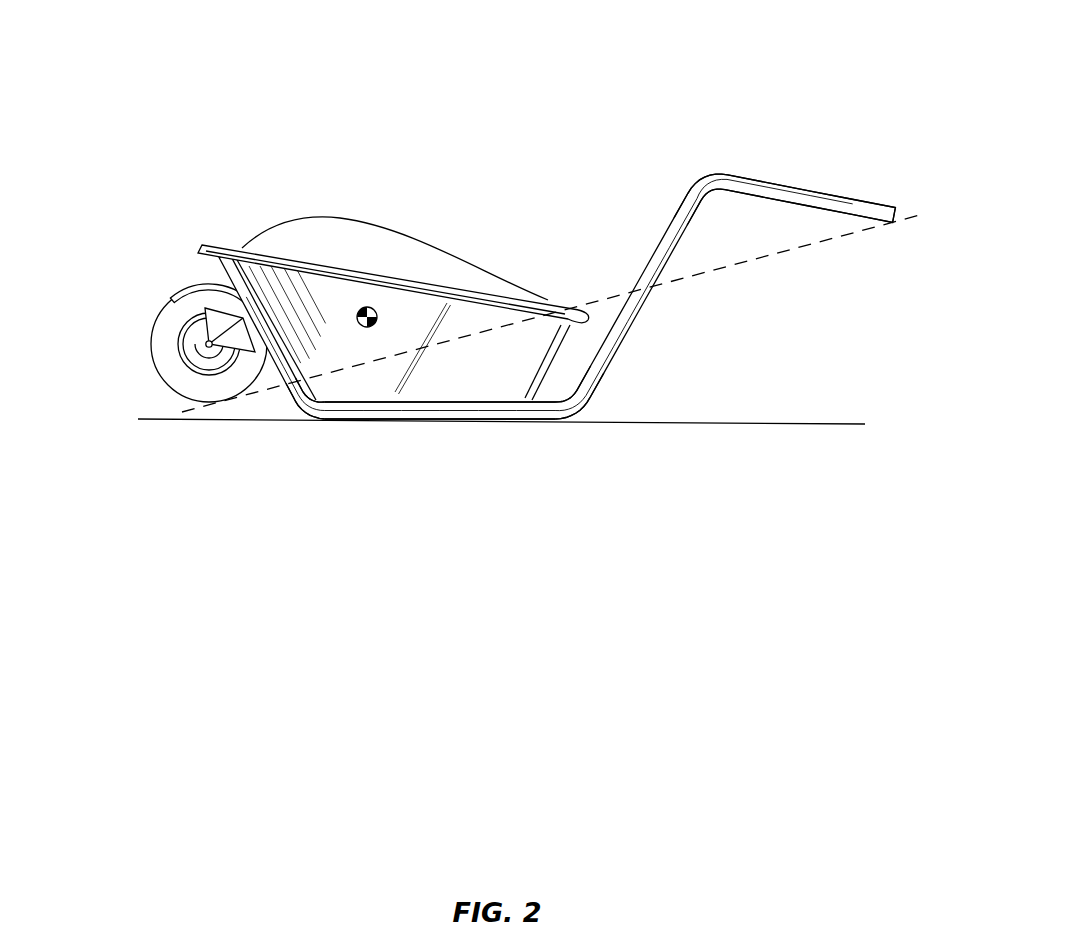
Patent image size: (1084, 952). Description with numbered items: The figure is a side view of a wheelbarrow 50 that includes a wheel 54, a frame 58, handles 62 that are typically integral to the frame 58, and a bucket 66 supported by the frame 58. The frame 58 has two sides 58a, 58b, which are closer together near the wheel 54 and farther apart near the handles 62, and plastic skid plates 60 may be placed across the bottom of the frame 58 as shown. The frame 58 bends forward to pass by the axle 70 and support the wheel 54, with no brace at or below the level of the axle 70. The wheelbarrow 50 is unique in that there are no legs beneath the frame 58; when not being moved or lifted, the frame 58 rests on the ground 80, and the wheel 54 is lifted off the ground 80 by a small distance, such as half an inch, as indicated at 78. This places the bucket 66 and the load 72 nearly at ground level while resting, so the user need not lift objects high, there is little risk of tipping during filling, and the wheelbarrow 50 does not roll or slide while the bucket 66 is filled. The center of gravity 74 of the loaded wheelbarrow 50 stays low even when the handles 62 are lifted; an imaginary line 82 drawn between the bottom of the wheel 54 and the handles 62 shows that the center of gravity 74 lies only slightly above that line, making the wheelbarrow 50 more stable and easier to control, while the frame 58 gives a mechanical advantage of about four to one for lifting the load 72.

The wheelbarrow 50 is at (581, 86).
The wheel 54 is at (207, 388).
The frame 58 is at (587, 392).
The frame side 58a is at (443, 405).
The frame side 58b is at (527, 430).
The plastic skid plate 60 is at (352, 420).
The handles 62 is at (833, 193).
The bucket 66 is at (318, 292).
The axle 70 is at (206, 342).
The load 72 is at (308, 242).
The center of gravity 74 is at (372, 311).
The wheel lift distance 78 is at (181, 405).
The ground 80 is at (237, 428).
The imaginary line 82 is at (782, 268).